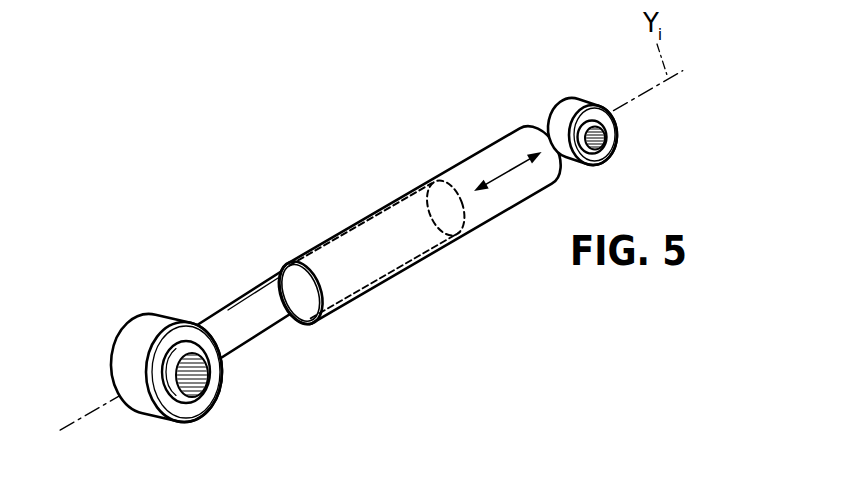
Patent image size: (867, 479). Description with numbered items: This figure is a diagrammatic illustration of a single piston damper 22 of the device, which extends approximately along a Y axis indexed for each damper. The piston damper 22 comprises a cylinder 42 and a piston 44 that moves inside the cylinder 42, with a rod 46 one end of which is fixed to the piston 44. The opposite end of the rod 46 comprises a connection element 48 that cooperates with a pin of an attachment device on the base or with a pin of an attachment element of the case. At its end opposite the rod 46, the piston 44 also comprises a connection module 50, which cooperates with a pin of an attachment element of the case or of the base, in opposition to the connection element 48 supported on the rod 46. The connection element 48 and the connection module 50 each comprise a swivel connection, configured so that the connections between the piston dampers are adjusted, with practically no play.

The piston damper 22 is at (330, 185).
The cylinder 42 is at (482, 150).
The piston 44 is at (463, 233).
The rod 46 is at (240, 299).
The connection element 48 is at (157, 313).
The connection module 50 is at (573, 98).